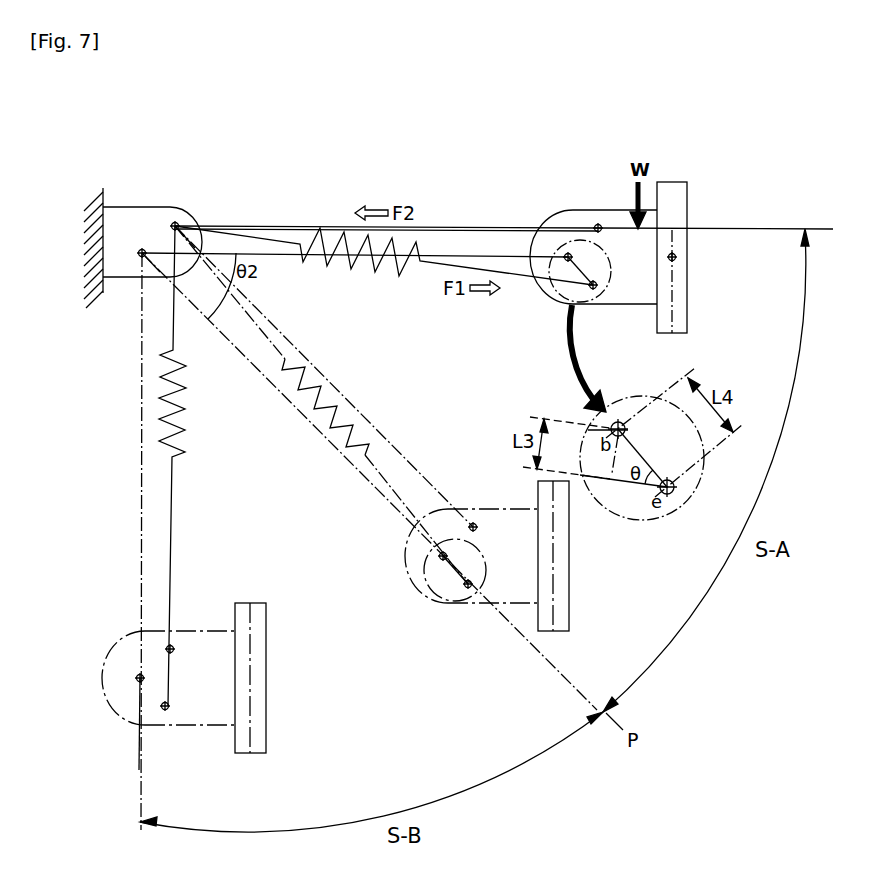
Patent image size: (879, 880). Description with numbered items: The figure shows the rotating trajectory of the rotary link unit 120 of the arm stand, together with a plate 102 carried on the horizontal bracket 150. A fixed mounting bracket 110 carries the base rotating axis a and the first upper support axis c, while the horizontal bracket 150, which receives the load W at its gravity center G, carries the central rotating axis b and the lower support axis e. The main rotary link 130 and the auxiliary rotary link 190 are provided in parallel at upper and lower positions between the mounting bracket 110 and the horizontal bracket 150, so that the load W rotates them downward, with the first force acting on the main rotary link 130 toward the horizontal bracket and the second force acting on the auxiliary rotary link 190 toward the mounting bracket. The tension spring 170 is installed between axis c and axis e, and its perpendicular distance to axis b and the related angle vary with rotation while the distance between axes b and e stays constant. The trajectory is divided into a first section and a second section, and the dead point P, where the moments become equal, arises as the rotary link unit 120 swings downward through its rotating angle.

The plate 102 is at (672, 186).
The mounting bracket 110 is at (140, 208).
The rotary link unit 120 is at (433, 190).
The main rotary link 130 is at (303, 279).
The horizontal bracket 150 is at (565, 214).
The tension spring 170 is at (481, 268).
The auxiliary rotary link 190 is at (272, 222).